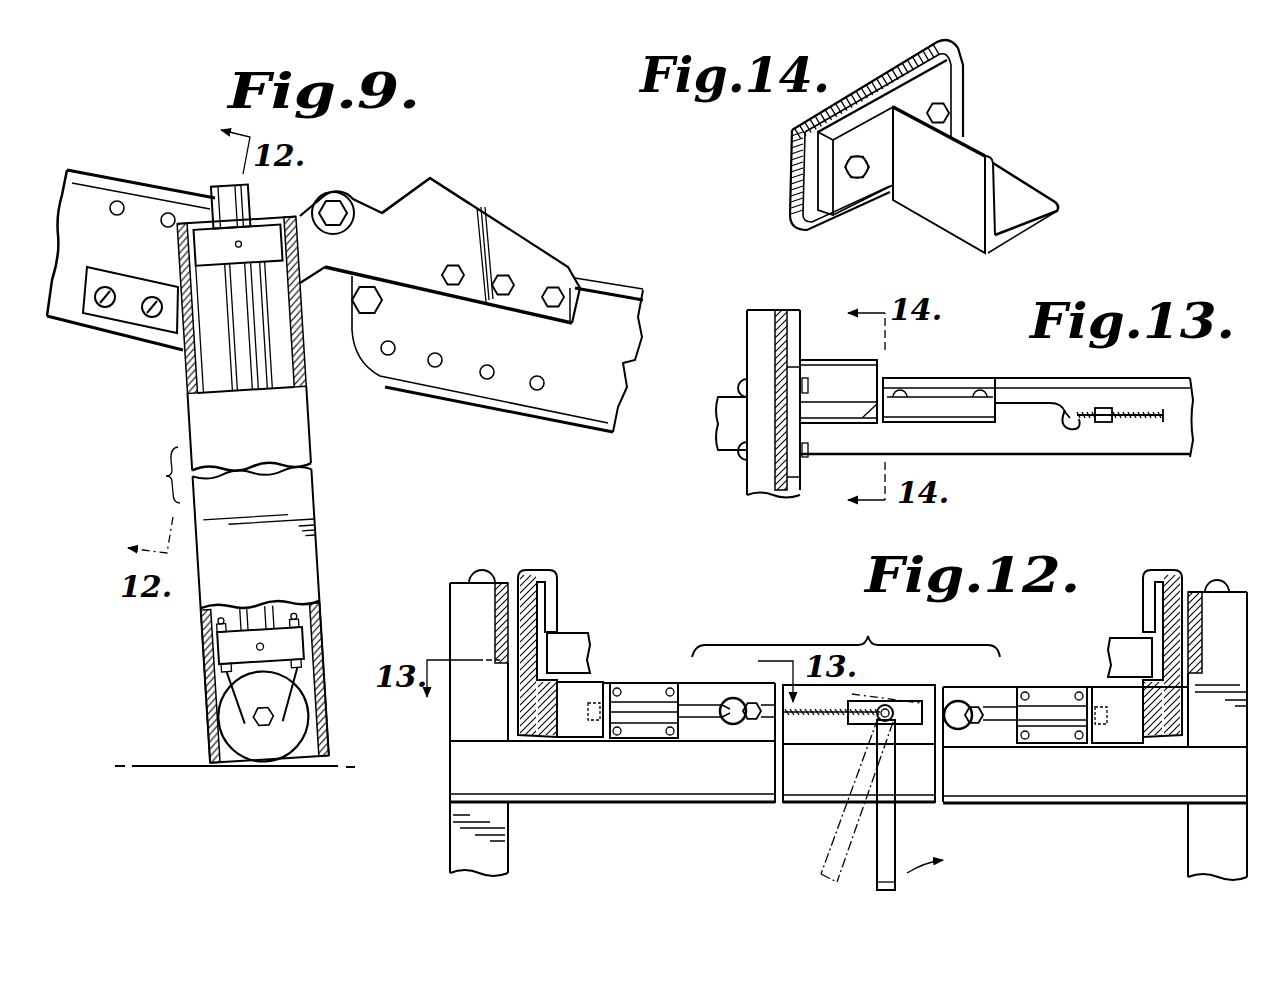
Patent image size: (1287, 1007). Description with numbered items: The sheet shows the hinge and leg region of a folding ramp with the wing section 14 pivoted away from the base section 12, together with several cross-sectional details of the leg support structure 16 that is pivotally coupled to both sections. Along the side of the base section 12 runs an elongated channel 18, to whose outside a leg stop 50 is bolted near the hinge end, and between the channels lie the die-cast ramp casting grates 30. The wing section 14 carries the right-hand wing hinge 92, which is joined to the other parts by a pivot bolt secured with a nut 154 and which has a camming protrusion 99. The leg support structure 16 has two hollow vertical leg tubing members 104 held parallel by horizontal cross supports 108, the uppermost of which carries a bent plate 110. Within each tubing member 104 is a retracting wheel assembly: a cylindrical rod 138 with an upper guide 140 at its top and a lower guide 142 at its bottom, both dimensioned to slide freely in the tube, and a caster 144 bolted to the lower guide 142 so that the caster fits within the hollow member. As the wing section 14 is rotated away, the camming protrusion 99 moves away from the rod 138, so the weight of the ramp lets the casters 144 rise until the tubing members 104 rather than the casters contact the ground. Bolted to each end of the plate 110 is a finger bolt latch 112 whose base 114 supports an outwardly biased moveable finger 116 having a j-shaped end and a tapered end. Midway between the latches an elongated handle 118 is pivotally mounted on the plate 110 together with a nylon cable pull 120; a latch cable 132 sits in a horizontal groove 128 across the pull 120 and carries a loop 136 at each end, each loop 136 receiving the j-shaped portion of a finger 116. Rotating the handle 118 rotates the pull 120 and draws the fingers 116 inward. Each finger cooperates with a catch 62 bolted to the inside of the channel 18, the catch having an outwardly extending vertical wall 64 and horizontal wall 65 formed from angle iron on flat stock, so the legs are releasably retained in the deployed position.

In FIG. 9, the base section 12 is at (137, 180).
In FIG. 12, the base section 12 is at (556, 572).
In FIG. 9, the wing section 14 is at (522, 419).
In FIG. 9, the leg support structure 16 is at (313, 452).
In FIG. 14, the elongated channel 18 is at (963, 65).
In FIG. 12, the ramp casting grate 30 is at (573, 636).
In FIG. 9, the leg stop 50 is at (129, 322).
In FIG. 14, the catch 62 is at (1031, 185).
In FIG. 13, the catch 62 is at (840, 360).
In FIG. 12, the catch 62 is at (597, 683).
In FIG. 14, the vertical wall 64 is at (993, 186).
In FIG. 14, the horizontal wall 65 is at (1015, 235).
In FIG. 9, the right-hand wing hinge 92 is at (530, 240).
In FIG. 9, the camming protrusion 99 is at (446, 180).
In FIG. 12, the leg tubing member 104 is at (463, 719).
In FIG. 12, the horizontal cross support 108 is at (1112, 797).
In FIG. 13, the plate 110 is at (963, 380).
In FIG. 13, the finger bolt latch 112 is at (912, 388).
In FIG. 13, the base 114 is at (942, 390).
In FIG. 12, the base 114 is at (650, 739).
In FIG. 12, the moveable finger 116 is at (703, 719).
In FIG. 12, the handle 118 is at (896, 838).
In FIG. 12, the cable pull 120 is at (912, 700).
In FIG. 12, the horizontal groove 128 is at (905, 724).
In FIG. 13, the latch cable 132 is at (1162, 422).
In FIG. 12, the latch cable 132 is at (837, 716).
In FIG. 13, the loop 136 is at (1088, 422).
In FIG. 12, the loop 136 is at (737, 698).
In FIG. 9, the cylindrical rod 138 is at (241, 382).
In FIG. 12, the cylindrical rod 138 is at (482, 569).
In FIG. 9, the upper guide 140 is at (196, 244).
In FIG. 9, the lower guide 142 is at (300, 641).
In FIG. 9, the caster 144 is at (227, 720).
In FIG. 9, the nut 154 is at (336, 206).